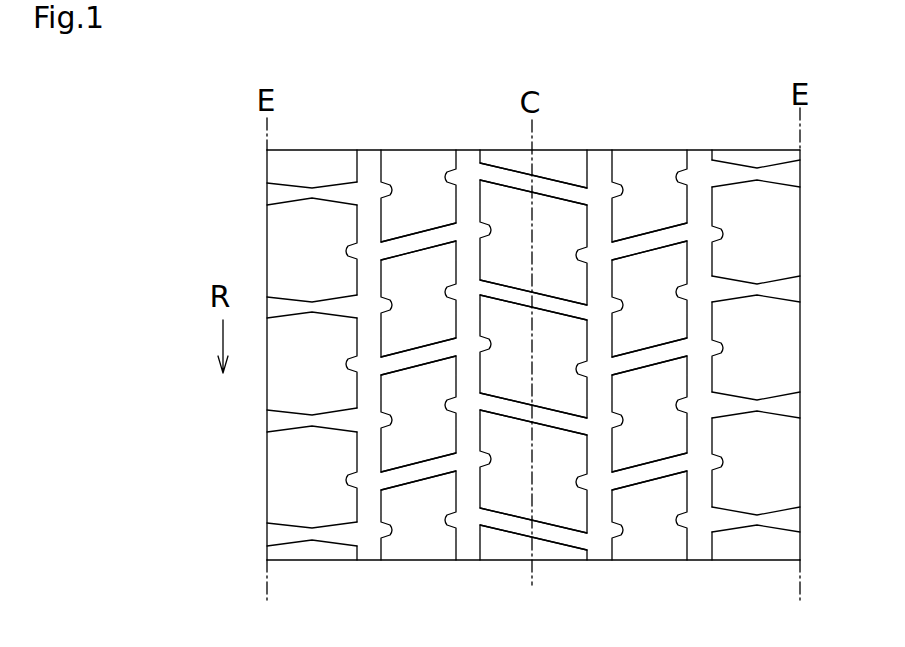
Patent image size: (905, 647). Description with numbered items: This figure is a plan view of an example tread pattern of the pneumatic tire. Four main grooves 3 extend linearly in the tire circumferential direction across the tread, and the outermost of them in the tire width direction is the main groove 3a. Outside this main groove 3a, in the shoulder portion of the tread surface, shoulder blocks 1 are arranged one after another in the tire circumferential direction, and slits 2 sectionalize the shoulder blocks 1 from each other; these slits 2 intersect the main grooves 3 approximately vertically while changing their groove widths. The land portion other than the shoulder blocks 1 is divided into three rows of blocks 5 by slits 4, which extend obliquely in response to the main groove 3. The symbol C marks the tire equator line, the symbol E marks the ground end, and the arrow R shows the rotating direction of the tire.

The shoulder block 1 is at (305, 513).
The slit 2 is at (317, 422).
The main groove 3 is at (521, 387).
The outermost main groove 3a is at (367, 550).
The slit 4 is at (413, 240).
The block 5 is at (422, 550).